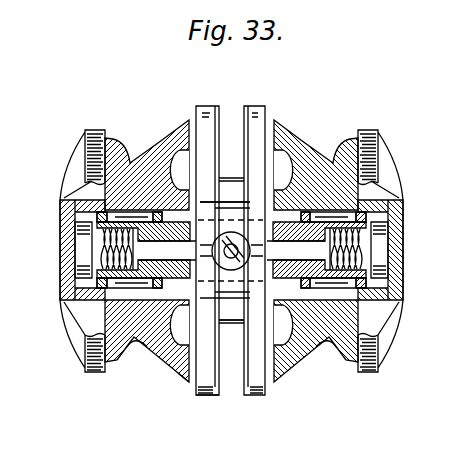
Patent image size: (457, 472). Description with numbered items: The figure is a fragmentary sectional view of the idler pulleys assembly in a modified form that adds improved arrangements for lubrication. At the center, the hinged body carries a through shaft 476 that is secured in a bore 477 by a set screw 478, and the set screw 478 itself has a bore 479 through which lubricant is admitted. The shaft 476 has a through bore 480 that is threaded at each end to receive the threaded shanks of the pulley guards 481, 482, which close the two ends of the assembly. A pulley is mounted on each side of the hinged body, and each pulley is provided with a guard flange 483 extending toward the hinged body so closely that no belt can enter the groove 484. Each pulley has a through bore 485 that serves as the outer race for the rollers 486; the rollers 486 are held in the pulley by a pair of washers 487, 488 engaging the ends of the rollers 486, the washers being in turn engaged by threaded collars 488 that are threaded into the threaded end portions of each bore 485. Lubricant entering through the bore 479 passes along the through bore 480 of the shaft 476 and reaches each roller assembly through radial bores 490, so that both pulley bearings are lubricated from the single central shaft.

The through shaft 476 is at (205, 216).
The bore 477 is at (234, 262).
The set screw 478 is at (220, 202).
The bore 479 is at (238, 276).
The through bore 480 is at (190, 259).
The pulley guard 481 is at (60, 191).
The pulley guard 482 is at (405, 160).
The guard flange 483 is at (186, 382).
The groove 484 is at (196, 385).
The through bore 485 is at (132, 342).
The rollers 486 is at (121, 162).
The washer 487 is at (390, 297).
The washer 488 is at (70, 319).
The radial bores 490 is at (99, 237).